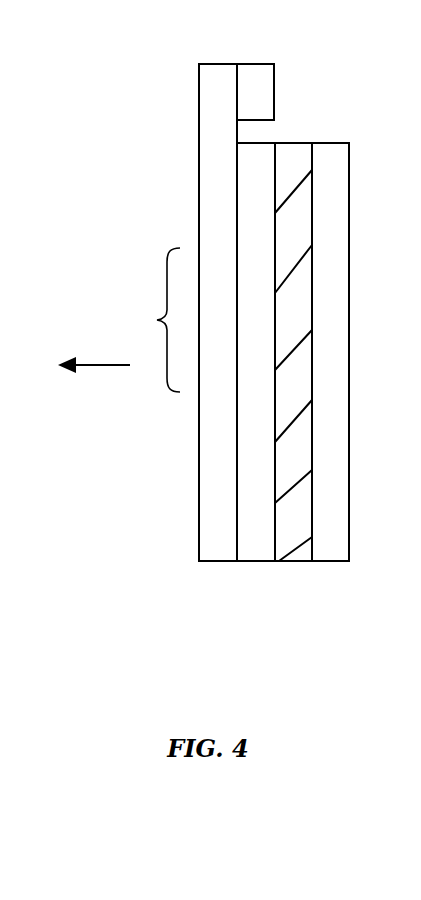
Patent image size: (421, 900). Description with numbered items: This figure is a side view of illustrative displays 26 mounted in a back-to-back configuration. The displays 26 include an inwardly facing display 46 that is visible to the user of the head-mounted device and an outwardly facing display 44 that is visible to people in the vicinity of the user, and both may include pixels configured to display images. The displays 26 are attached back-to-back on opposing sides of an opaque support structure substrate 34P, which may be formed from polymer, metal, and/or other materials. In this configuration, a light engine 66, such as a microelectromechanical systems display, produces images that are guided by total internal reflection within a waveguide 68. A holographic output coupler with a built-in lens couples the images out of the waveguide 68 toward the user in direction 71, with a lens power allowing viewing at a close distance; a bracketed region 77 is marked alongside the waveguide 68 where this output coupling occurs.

The display 46 is at (222, 57).
The light engine 66 is at (257, 70).
The waveguide 68 is at (217, 552).
The displays 26 is at (354, 635).
The support structure substrate 34P is at (306, 552).
The display 44 is at (340, 552).
The active area region 77 is at (154, 320).
The direction 71 is at (105, 368).